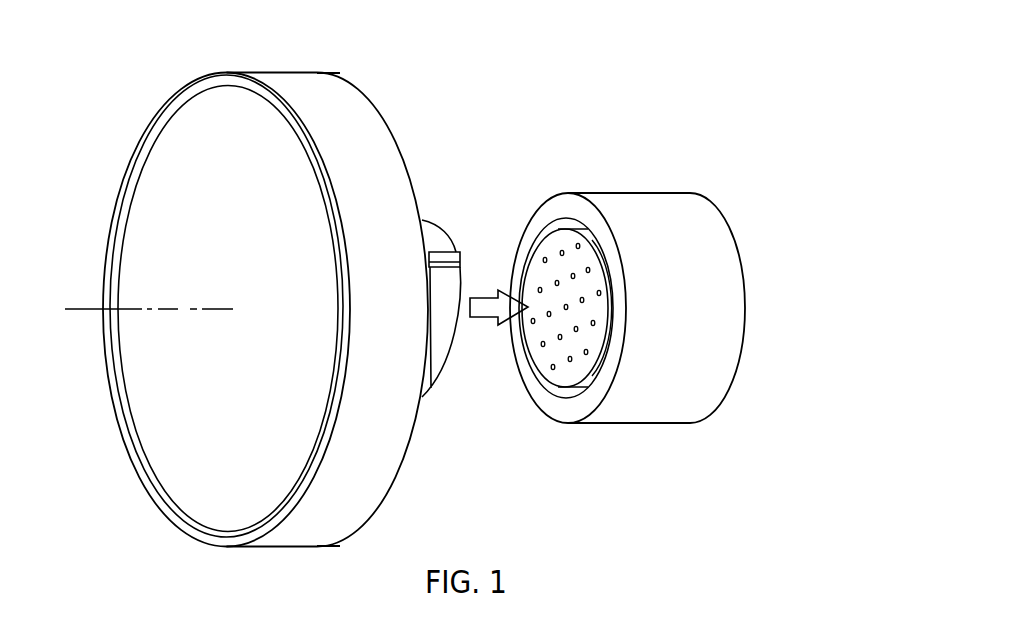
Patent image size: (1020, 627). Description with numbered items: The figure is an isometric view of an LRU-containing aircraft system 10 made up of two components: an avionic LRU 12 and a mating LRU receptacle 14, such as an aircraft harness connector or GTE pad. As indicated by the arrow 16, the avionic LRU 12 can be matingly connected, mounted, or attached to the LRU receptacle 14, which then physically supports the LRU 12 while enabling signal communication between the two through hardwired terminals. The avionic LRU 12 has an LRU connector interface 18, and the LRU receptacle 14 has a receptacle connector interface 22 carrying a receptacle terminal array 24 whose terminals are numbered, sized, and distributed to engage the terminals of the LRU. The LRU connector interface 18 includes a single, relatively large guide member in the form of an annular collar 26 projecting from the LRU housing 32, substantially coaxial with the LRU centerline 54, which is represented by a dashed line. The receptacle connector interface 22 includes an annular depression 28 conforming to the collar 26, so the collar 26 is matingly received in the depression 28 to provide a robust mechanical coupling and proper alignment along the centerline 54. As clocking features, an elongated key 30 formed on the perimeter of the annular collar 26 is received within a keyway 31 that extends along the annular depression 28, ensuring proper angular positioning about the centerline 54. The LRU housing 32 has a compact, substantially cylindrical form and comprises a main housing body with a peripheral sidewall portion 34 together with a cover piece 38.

The LRU-containing aircraft system 10 is at (604, 104).
The avionic LRU 12 is at (151, 114).
The LRU receptacle 14 is at (729, 403).
The arrow 16 is at (476, 297).
The LRU connector interface 18 is at (443, 391).
The receptacle connector interface 22 is at (522, 222).
The receptacle terminal array 24 is at (551, 368).
The annular collar 26 is at (427, 219).
The annular depression 28 is at (562, 393).
The elongated key 30 is at (459, 253).
The keyway 31 is at (612, 256).
The LRU housing 32 is at (392, 121).
The peripheral sidewall portion 34 is at (400, 305).
The cover piece 38 is at (157, 412).
The centerline 54 is at (172, 308).